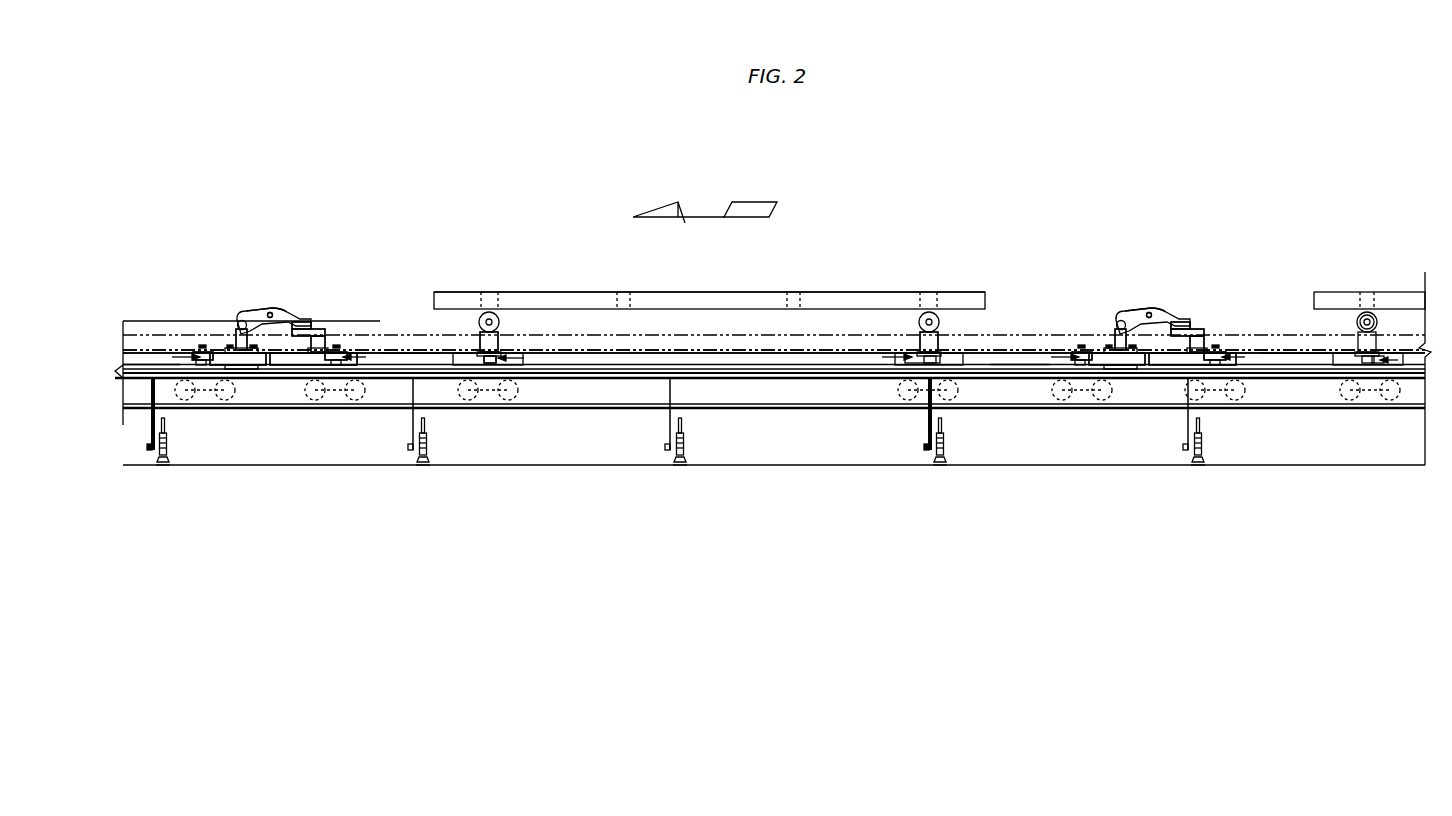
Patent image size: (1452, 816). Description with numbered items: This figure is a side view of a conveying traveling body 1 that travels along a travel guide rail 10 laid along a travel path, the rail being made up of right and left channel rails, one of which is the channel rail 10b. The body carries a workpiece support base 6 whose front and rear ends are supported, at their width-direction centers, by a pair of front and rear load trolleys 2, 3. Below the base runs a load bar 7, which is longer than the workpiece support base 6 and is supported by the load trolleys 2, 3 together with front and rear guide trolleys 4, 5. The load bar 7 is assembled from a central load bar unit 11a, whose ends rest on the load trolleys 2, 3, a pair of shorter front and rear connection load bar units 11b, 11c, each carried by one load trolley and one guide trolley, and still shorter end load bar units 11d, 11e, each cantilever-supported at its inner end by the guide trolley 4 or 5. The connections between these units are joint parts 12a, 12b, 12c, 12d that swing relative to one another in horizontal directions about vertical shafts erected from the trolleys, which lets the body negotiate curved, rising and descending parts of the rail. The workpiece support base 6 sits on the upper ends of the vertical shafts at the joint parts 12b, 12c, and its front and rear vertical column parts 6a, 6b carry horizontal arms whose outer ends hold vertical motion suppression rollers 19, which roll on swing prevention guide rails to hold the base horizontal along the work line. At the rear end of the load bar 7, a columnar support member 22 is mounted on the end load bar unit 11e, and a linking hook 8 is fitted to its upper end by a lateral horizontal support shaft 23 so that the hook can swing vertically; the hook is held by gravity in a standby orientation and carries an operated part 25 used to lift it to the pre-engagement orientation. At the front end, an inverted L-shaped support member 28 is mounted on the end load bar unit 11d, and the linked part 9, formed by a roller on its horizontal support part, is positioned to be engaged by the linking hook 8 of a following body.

The conveying traveling body 1 is at (843, 290).
The front load trolley 2 is at (485, 392).
The rear load trolley 3 is at (922, 400).
The front guide trolley 4 is at (337, 392).
The rear guide trolley 5 is at (198, 392).
The workpiece support base 6 is at (537, 298).
The front vertical column part 6a is at (480, 342).
The rear vertical column part 6b is at (938, 342).
The load bar 7 is at (138, 348).
The linking hook 8 is at (284, 315).
The linked part 9 is at (303, 323).
The travel guide rail 10 is at (721, 410).
The channel rail 10b is at (782, 392).
The central load bar unit 11a is at (713, 360).
The front connection load bar unit 11b is at (400, 362).
The rear connection load bar unit 11c is at (1010, 356).
The front end load bar unit 11d is at (299, 366).
The rear end load bar unit 11e is at (252, 366).
The joint part 12a is at (356, 357).
The joint part 12b is at (527, 359).
The joint part 12c is at (880, 357).
The joint part 12d is at (185, 357).
The vertical motion suppression roller 19 is at (489, 311).
The columnar support member 22 is at (243, 318).
The horizontal support shaft 23 is at (236, 325).
The operated part 25 is at (270, 311).
The inverted L-shaped support member 28 is at (322, 332).